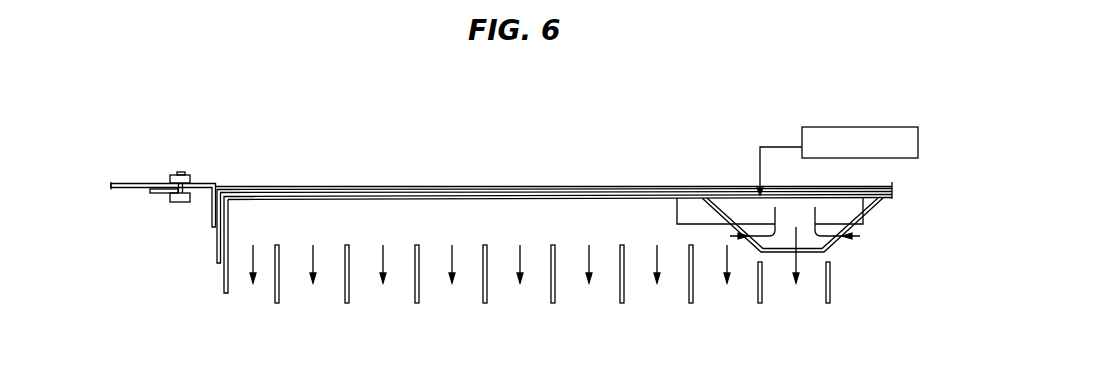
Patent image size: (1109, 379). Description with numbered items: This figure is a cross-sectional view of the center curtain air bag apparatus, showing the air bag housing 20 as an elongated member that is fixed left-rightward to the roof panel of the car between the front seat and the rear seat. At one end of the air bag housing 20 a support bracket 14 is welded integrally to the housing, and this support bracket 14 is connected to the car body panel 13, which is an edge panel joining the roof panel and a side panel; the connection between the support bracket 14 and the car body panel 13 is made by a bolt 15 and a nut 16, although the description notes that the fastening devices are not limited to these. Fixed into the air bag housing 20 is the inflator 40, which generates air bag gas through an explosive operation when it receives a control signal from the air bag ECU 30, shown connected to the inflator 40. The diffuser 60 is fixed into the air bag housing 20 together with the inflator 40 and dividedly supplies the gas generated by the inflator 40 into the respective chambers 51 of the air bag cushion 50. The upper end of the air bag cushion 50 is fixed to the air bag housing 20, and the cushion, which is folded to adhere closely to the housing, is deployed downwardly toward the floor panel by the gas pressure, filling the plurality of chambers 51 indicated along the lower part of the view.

The car body panel 13 is at (122, 183).
The support bracket 14 is at (157, 193).
The bolt 15 is at (182, 203).
The nut 16 is at (190, 176).
The air bag housing 20 is at (518, 187).
The air bag ECU 30 is at (837, 127).
The inflator 40 is at (740, 207).
The air bag cushion 50 is at (223, 282).
The chambers 51 is at (522, 295).
The diffuser 60 is at (833, 245).